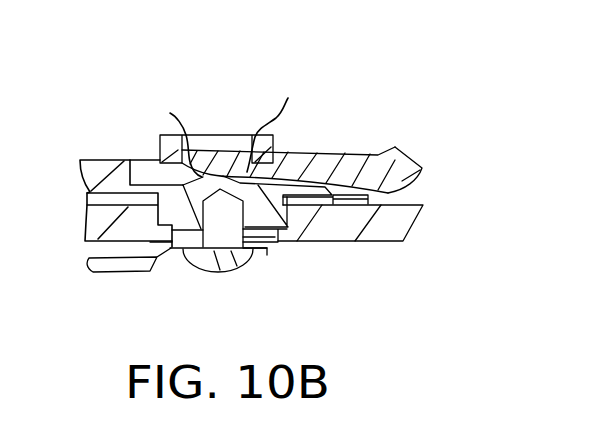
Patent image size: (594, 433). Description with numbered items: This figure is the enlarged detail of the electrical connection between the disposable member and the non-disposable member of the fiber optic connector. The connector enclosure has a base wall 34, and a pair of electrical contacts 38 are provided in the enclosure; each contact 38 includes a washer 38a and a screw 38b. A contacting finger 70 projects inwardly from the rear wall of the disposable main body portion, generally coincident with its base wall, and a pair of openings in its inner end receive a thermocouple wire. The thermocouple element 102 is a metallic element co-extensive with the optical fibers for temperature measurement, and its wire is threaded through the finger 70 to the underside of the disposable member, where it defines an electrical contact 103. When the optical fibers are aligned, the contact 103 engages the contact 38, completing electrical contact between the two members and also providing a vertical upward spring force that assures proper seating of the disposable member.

The base wall 34 is at (399, 216).
The electrical contact 38 is at (300, 220).
The washer 38a is at (273, 250).
The screw 38b is at (197, 267).
The contacting finger 70 is at (377, 168).
The thermocouple element 102 is at (240, 264).
The electrical contact 103 is at (295, 156).